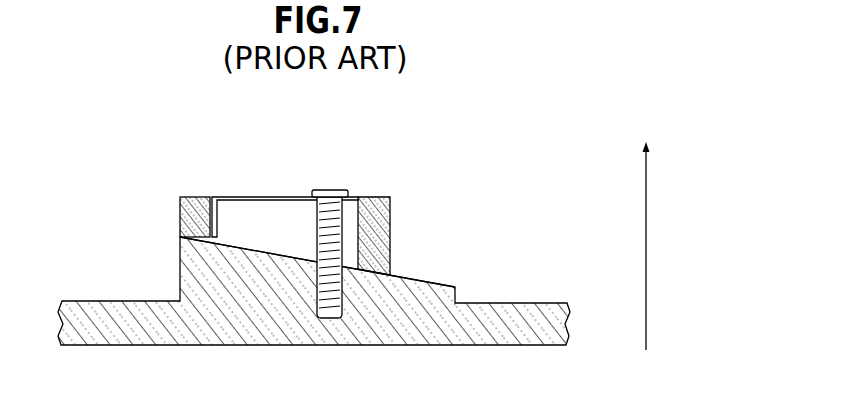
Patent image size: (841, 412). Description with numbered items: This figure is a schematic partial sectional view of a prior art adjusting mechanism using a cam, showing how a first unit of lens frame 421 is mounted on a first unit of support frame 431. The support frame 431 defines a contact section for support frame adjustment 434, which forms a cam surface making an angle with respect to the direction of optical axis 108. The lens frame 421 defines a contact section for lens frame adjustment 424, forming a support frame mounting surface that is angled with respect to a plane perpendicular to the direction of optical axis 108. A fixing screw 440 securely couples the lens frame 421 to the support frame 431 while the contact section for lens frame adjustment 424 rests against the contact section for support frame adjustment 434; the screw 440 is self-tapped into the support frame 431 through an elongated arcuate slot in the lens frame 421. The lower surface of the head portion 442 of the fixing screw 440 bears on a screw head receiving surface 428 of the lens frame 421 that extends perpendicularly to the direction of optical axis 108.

The direction of optical axis 108 is at (650, 245).
The first unit of lens frame 421 is at (377, 233).
The contact section for lens frame adjustment 424 is at (193, 242).
The screw head receiving surface 428 is at (380, 193).
The first unit of support frame 431 is at (111, 327).
The contact section for support frame adjustment 434 is at (440, 280).
The fixing screw 440 is at (320, 189).
The head portion 442 is at (340, 189).